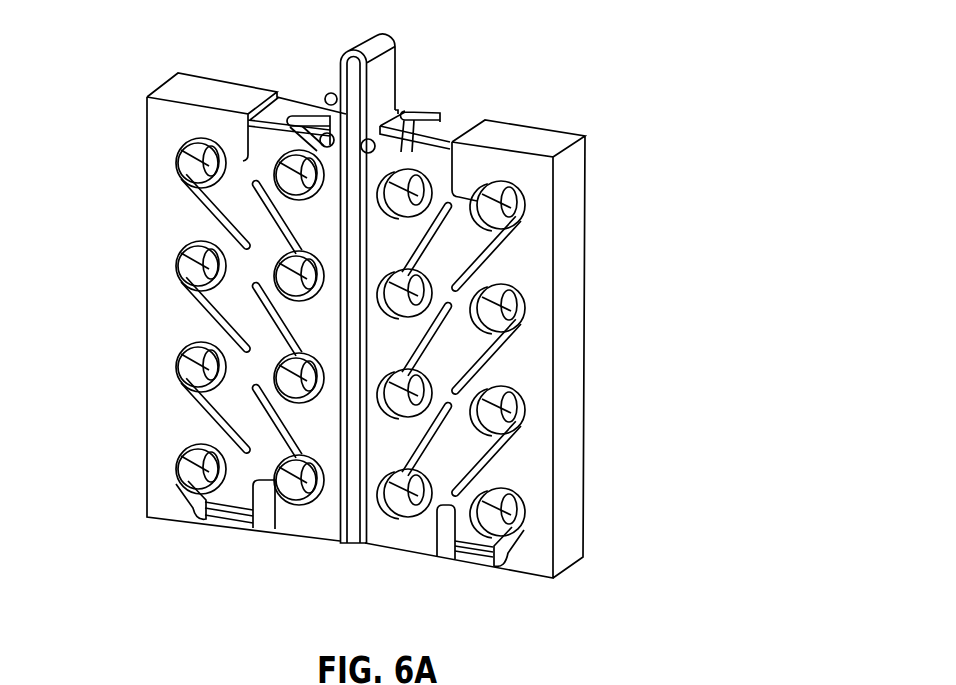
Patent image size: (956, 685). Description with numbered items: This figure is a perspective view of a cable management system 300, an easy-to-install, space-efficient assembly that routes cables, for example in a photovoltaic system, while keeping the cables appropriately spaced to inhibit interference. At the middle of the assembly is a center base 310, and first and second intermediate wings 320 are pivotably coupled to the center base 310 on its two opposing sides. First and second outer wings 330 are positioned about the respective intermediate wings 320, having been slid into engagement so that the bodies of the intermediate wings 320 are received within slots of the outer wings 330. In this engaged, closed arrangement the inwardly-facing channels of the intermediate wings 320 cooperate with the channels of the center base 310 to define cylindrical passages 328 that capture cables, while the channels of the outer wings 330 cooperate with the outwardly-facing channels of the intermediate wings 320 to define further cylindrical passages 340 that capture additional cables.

The cable management system 300 is at (559, 42).
The center base 310 is at (390, 340).
The intermediate wings 320 is at (232, 298).
The cylindrical passages 328 is at (305, 285).
The outer wings 330 is at (163, 133).
The cylindrical passages 340 is at (203, 272).